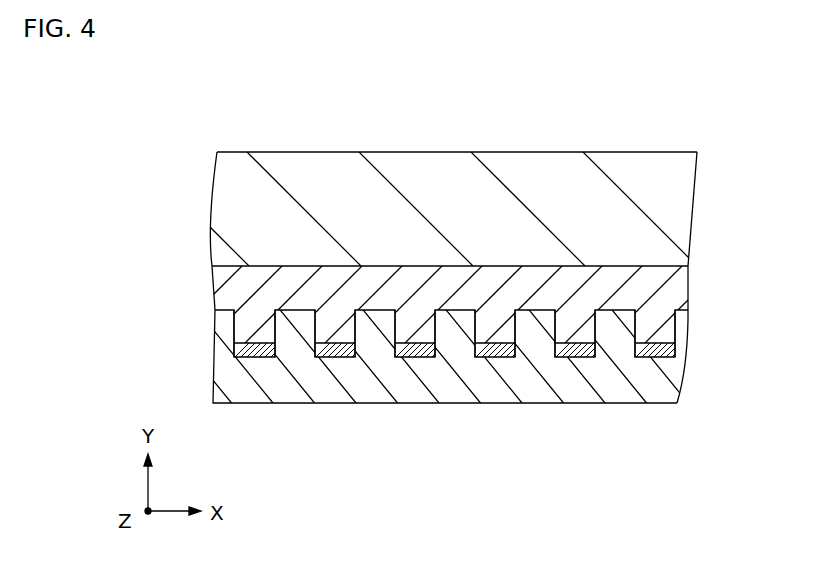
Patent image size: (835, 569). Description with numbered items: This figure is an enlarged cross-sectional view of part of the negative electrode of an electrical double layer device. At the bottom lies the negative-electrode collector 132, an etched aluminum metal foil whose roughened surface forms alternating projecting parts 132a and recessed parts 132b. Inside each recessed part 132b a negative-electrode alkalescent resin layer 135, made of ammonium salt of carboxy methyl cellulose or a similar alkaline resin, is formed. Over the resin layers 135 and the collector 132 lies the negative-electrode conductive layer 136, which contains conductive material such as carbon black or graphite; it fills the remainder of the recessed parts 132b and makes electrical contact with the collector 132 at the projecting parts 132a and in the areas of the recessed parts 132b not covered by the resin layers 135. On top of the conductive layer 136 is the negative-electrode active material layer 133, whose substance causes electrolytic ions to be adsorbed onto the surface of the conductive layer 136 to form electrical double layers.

The negative-electrode active material layer 133 is at (687, 209).
The negative-electrode conductive layer 136 is at (685, 290).
The negative-electrode alkalescent resin layer 135 is at (657, 338).
The negative-electrode collector 132 is at (677, 369).
The projecting part 132a is at (372, 318).
The recessed part 132b is at (495, 330).